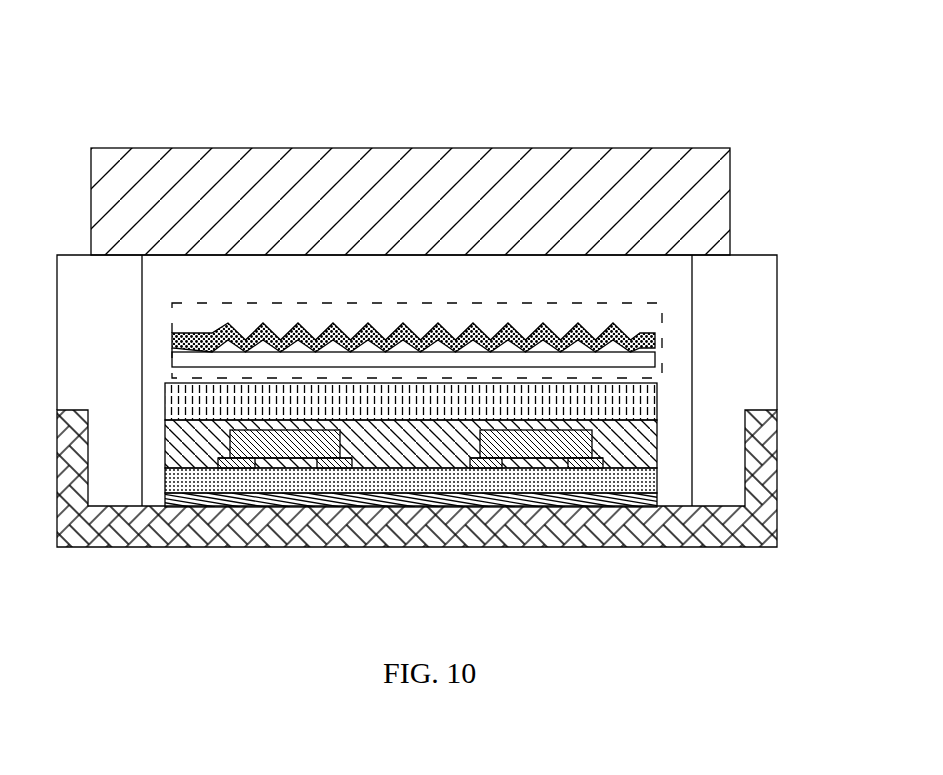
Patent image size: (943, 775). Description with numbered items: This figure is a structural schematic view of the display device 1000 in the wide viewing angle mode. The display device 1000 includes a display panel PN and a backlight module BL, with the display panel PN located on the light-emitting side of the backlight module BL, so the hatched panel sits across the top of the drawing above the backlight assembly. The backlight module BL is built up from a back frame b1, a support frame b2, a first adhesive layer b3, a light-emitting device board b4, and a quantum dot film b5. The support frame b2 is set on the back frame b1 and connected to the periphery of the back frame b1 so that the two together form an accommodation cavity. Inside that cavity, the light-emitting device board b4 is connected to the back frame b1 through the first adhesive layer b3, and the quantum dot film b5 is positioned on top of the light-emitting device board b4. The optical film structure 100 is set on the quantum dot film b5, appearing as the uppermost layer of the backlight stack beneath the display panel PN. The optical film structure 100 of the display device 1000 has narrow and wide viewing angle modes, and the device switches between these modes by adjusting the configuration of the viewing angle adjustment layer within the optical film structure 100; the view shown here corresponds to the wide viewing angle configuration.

The display device 1000 is at (806, 83).
The display panel PN is at (720, 198).
The backlight module BL is at (417, 449).
The back frame b1 is at (160, 532).
The support frame b2 is at (116, 487).
The first adhesive layer b3 is at (278, 497).
The light-emitting device board b4 is at (338, 492).
The quantum dot film b5 is at (202, 420).
The optical film structure 100 is at (417, 446).